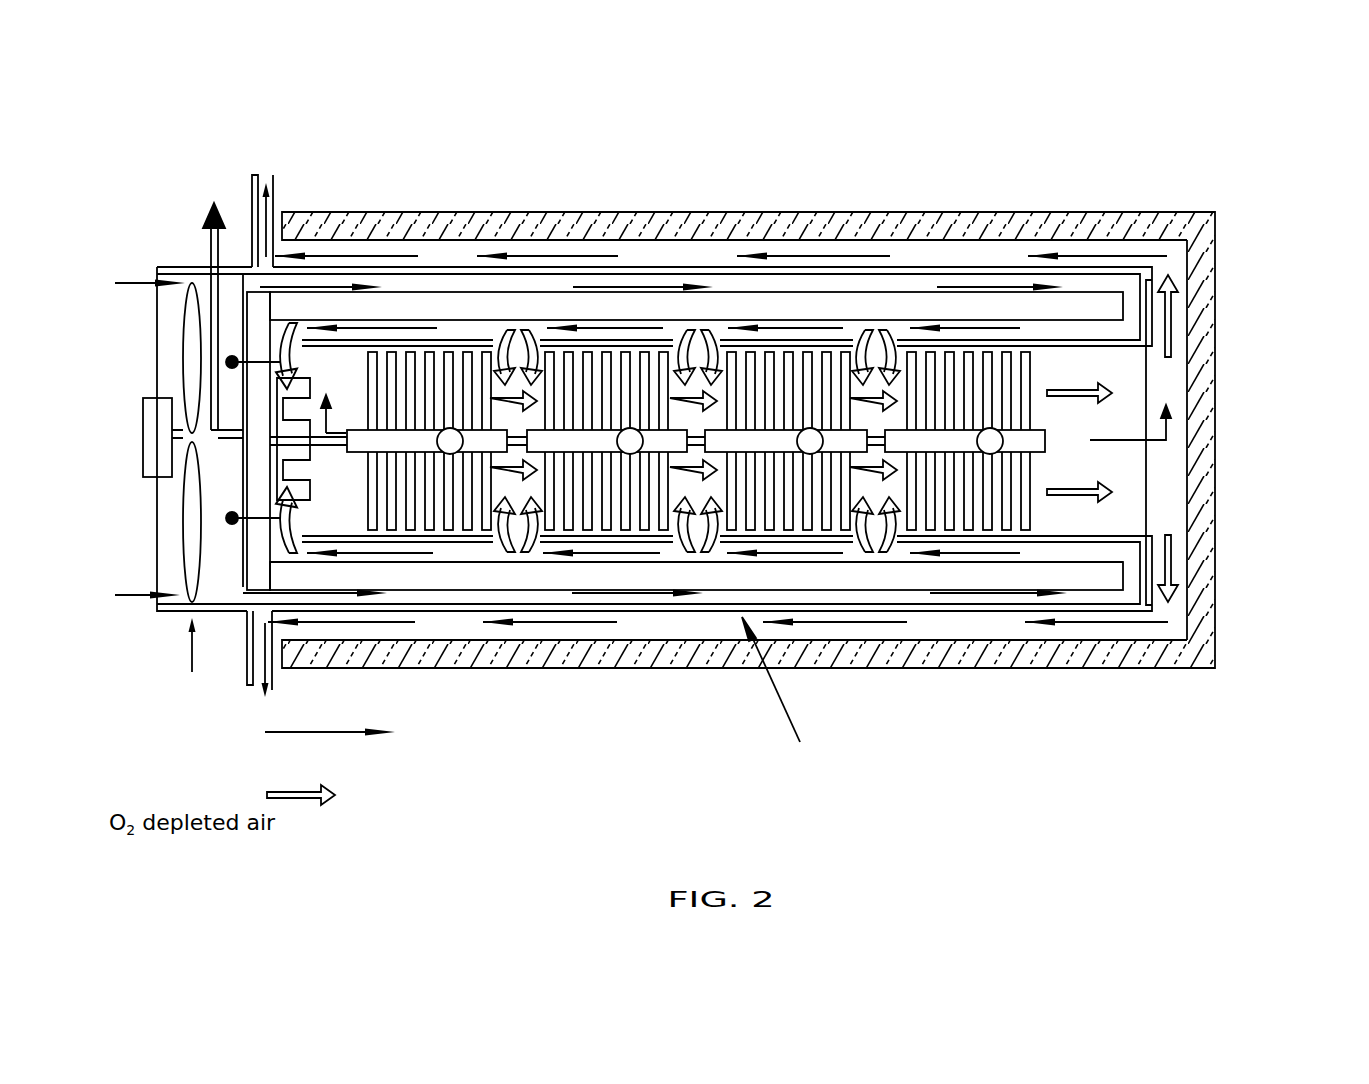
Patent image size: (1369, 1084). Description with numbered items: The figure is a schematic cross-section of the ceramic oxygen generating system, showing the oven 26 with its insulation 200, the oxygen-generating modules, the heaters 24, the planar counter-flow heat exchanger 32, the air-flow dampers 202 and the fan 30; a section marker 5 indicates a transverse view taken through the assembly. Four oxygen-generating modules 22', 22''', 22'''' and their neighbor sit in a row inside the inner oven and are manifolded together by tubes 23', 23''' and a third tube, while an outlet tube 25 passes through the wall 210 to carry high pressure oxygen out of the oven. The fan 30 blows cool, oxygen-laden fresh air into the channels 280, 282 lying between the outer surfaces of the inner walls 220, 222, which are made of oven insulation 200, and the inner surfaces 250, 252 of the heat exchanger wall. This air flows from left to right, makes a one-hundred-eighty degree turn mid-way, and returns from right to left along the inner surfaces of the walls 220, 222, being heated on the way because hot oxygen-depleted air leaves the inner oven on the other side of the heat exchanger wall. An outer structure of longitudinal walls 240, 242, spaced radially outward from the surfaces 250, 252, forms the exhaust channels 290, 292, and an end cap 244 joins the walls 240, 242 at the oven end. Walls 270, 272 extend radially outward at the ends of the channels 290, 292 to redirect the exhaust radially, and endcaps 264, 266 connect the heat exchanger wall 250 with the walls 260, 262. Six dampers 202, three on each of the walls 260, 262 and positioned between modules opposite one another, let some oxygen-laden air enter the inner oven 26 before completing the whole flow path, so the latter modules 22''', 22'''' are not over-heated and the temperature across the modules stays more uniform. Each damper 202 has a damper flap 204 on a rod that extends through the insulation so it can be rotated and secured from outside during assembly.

The section line of FIG. 5 is at (746, 416).
The oxygen generating module 22' is at (429, 537).
The oxygen generating module 22''' is at (788, 339).
The oxygen generating module 22'''' is at (968, 339).
The tube 23' is at (527, 350).
The tube 23''' is at (867, 350).
The heaters 24 is at (258, 521).
The outlet tube 25 is at (318, 444).
The oven 26 is at (1243, 623).
The fan 30 is at (255, 521).
The planar counter-flow heat exchanger 32 is at (777, 692).
The insulation 200 is at (600, 603).
The air-flow damper 202 is at (590, 577).
The damper flap 204 is at (508, 548).
The wall 210 is at (276, 316).
The inner wall 220 is at (663, 307).
The inner wall 222 is at (728, 577).
The longitudinal wall 240 is at (900, 212).
The longitudinal wall 242 is at (948, 650).
The end cap 244 is at (1203, 427).
The inner surface of heat exchanger wall 250 is at (432, 268).
The inner surface of heat exchanger wall 252 is at (1122, 610).
The wall 260 is at (1072, 340).
The wall 262 is at (1110, 538).
The endcap 264 is at (1147, 316).
The endcap 266 is at (1142, 567).
The wall 270 is at (258, 176).
The wall 272 is at (245, 678).
The channel 280 is at (473, 285).
The channel 282 is at (468, 597).
The channel 290 is at (1005, 253).
The channel 292 is at (867, 630).